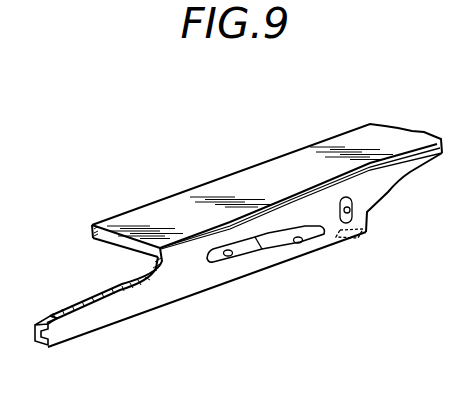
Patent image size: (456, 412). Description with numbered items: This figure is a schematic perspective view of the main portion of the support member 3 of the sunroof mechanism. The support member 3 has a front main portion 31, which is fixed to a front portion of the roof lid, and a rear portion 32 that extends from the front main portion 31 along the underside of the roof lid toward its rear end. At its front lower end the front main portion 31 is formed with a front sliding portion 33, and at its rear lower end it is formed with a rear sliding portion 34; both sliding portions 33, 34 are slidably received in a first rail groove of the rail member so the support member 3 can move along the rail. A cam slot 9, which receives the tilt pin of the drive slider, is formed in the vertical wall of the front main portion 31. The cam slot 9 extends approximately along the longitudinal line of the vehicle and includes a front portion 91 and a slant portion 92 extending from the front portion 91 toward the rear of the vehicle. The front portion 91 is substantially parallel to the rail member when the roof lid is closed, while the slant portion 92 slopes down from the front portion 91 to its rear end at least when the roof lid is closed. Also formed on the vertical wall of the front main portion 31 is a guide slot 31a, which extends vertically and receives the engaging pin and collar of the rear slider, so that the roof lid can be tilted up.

The support member 3 is at (347, 128).
The front main portion 31 is at (290, 207).
The rear portion 32 is at (418, 160).
The guide slot 31a is at (352, 213).
The rear sliding portion 34 is at (345, 240).
The cam slot 9 is at (280, 247).
The front portion of the cam slot 91 is at (233, 256).
The slant portion 92 is at (310, 243).
The front sliding portion 33 is at (41, 346).